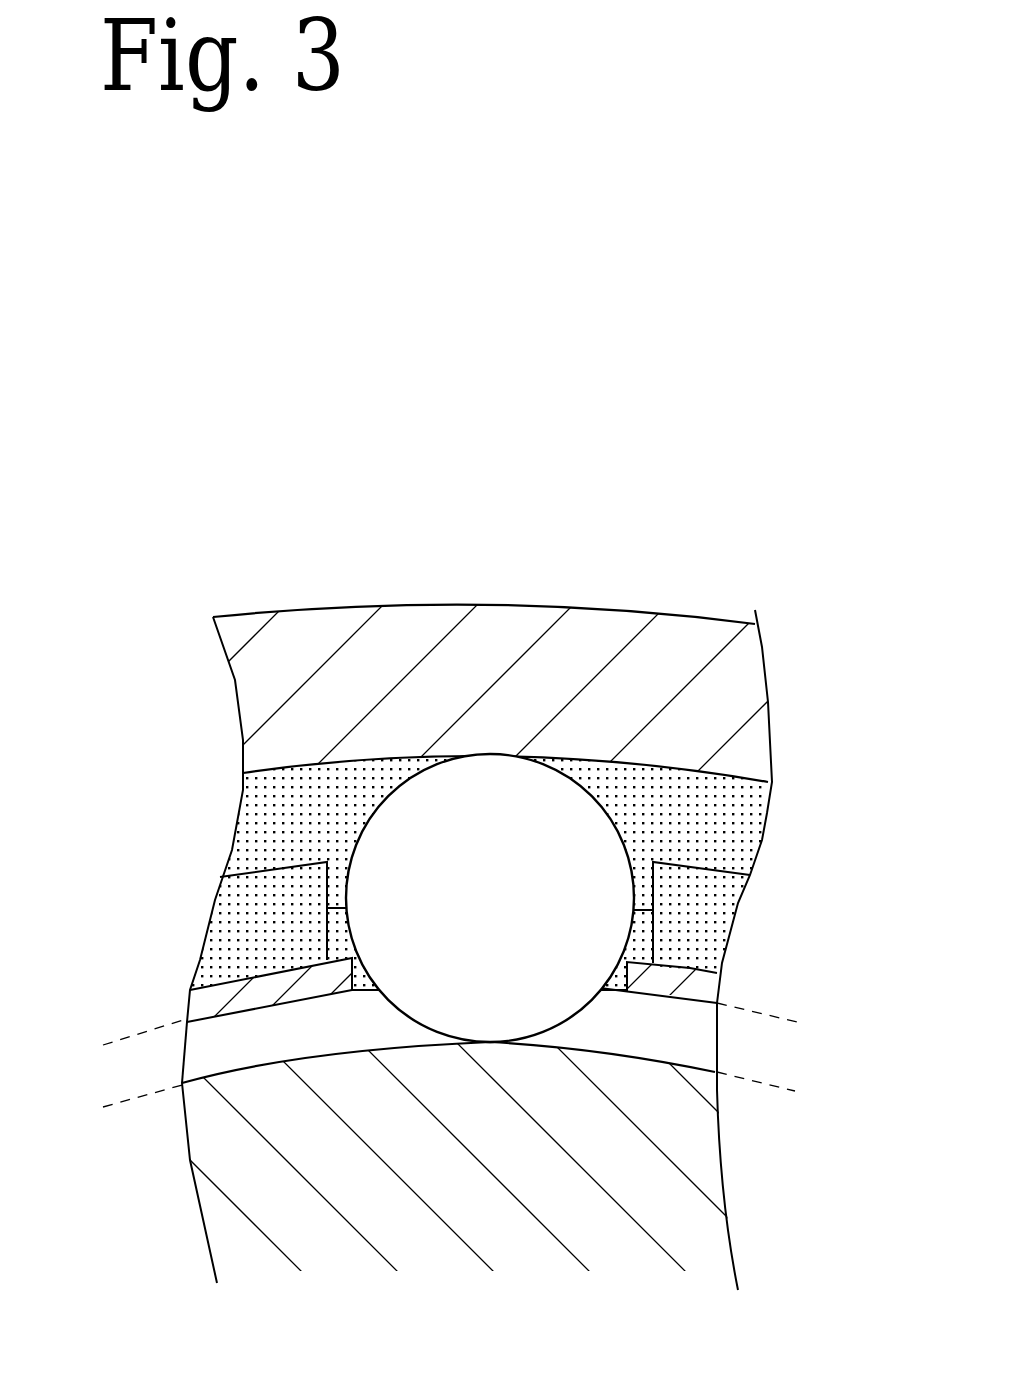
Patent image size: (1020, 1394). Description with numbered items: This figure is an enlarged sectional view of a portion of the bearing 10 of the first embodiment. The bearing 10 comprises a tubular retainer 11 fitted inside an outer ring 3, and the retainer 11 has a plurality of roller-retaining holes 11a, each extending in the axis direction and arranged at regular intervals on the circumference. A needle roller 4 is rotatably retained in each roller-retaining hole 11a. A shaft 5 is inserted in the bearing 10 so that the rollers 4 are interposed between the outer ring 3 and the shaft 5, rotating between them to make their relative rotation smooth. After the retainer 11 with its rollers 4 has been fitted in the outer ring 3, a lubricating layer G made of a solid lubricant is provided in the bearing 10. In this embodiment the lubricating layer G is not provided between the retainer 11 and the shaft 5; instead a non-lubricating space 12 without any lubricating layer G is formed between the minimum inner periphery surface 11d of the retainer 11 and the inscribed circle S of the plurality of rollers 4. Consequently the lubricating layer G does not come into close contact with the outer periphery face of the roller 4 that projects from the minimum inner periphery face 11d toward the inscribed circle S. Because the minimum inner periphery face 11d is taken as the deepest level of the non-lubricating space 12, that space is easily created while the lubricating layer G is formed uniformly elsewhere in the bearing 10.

The outer ring 3 is at (388, 628).
The needle roller 4 is at (500, 780).
The shaft 5 is at (360, 1208).
The bearing 10 is at (690, 563).
The retainer 11 is at (719, 898).
The roller-retaining hole 11a is at (357, 990).
The minimum inner periphery surface 11d is at (125, 1035).
The non-lubricating space 12 is at (697, 1035).
The lubricating layer G is at (328, 790).
The inscribed circle S is at (128, 1100).